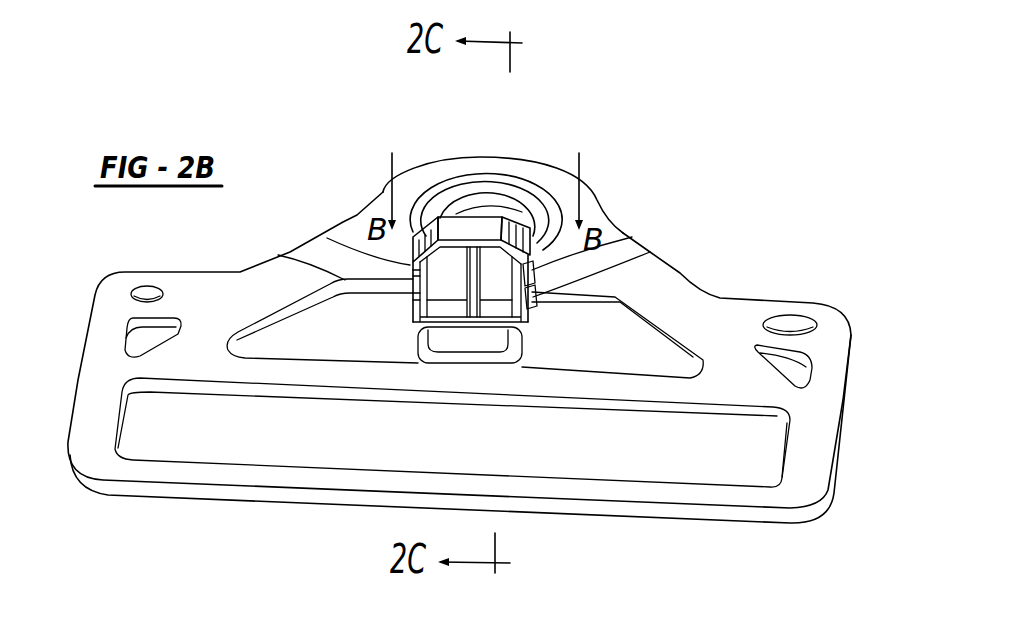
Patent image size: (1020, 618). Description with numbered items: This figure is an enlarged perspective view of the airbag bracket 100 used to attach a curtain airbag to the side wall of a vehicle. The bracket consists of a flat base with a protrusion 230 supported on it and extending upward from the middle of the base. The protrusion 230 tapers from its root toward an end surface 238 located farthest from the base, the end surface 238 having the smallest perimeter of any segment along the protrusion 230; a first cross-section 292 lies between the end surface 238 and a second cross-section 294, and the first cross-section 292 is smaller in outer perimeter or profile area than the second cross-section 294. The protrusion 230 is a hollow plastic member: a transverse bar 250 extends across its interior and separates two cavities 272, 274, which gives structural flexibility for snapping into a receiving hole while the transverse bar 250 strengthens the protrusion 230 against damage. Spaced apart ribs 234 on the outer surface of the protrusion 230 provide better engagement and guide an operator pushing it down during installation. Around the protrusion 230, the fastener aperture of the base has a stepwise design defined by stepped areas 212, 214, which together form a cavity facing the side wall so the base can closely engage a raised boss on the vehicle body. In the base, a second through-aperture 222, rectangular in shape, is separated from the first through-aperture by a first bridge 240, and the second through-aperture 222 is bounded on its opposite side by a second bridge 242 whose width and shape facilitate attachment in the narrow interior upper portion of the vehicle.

The airbag bracket 100 is at (125, 516).
The stepped area 212 is at (487, 202).
The stepped area 214 is at (542, 160).
The second through-aperture 222 is at (226, 445).
The protrusion 230 is at (406, 321).
The ribs 234 is at (540, 309).
The end surface 238 is at (456, 222).
The first bridge 240 is at (693, 402).
The second bridge 242 is at (689, 493).
The transverse bar 250 is at (474, 306).
The cavity 272 is at (453, 284).
The cavity 274 is at (501, 286).
The first cross-section 292 is at (515, 208).
The second cross-section 294 is at (533, 226).